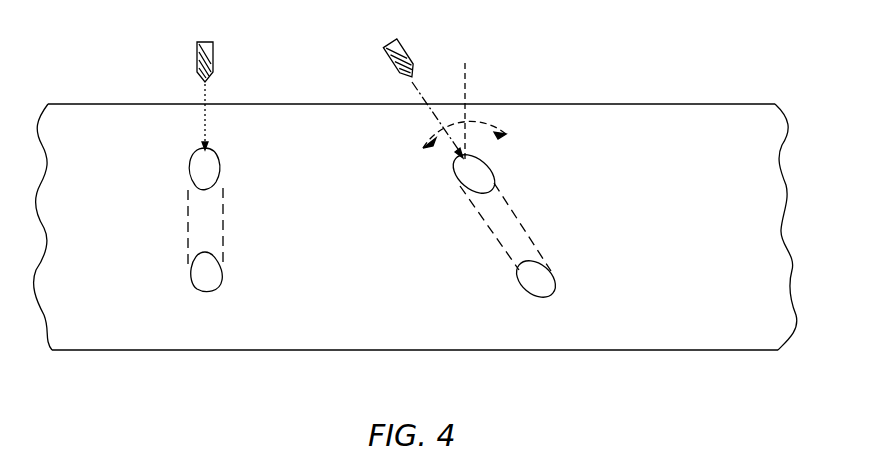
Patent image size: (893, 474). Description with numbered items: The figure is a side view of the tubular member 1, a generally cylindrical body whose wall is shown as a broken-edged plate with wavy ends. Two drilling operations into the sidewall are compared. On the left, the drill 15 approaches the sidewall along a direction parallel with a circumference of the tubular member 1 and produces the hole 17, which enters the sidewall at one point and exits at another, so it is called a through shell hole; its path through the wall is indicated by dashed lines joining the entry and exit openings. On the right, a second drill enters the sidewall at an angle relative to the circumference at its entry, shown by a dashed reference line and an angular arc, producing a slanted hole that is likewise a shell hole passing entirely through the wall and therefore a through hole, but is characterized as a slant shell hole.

The tubular body 1 is at (663, 351).
The drill 15 is at (196, 47).
The hole 17 is at (188, 217).